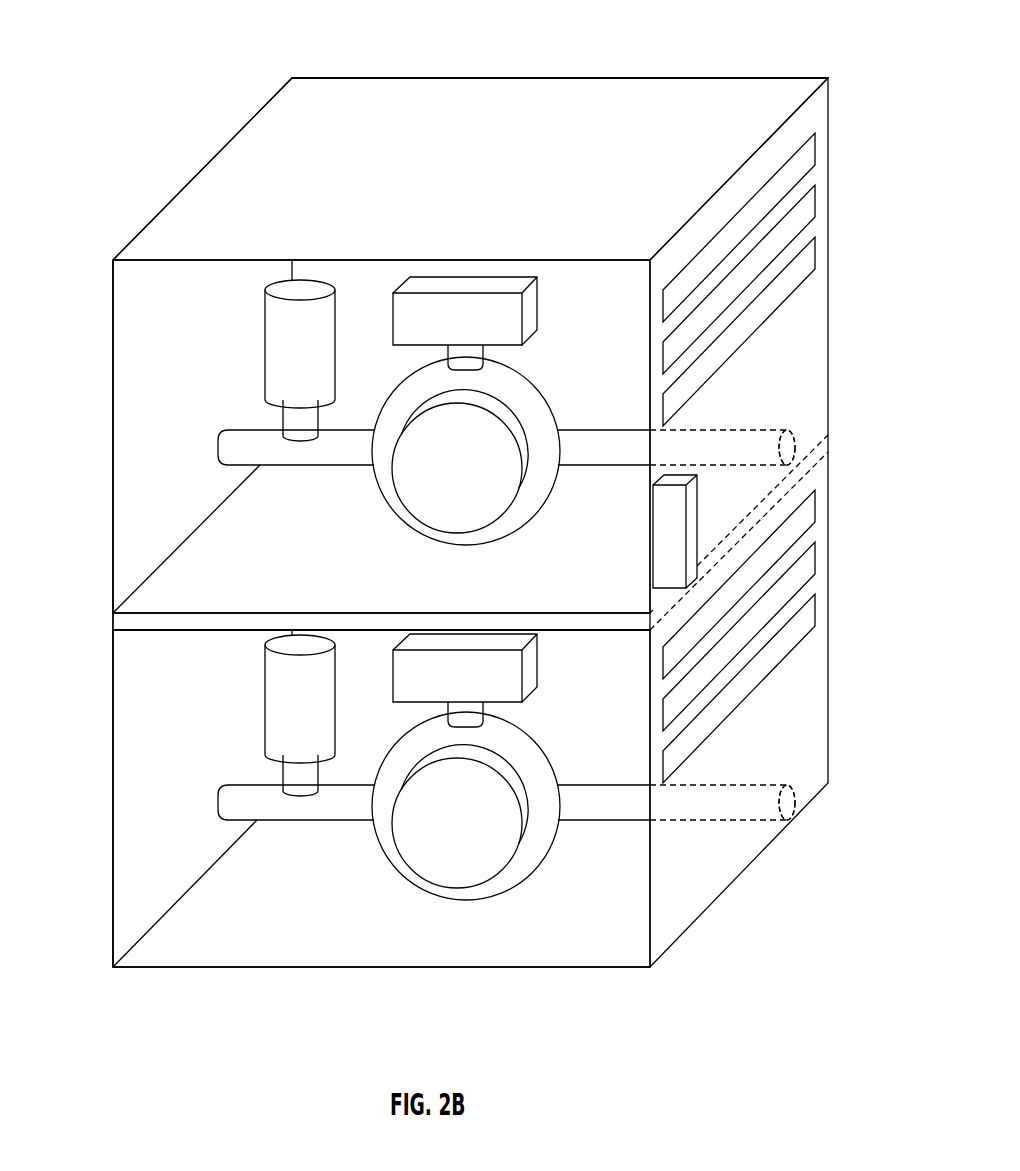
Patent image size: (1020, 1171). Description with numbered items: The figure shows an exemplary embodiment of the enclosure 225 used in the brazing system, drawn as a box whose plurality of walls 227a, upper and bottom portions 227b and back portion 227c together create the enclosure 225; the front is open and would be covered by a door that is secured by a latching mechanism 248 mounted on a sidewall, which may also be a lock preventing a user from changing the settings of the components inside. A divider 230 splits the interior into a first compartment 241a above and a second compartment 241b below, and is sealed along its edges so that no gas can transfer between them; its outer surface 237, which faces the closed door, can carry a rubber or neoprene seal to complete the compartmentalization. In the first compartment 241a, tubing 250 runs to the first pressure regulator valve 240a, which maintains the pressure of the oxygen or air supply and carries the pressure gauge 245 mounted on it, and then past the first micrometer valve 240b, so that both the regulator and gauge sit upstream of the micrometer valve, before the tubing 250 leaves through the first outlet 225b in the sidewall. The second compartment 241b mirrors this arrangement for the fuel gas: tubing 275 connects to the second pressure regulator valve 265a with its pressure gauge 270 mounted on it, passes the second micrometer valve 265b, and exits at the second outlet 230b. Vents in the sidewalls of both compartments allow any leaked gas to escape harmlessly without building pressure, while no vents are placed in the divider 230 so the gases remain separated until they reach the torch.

The enclosure 225 is at (710, 78).
The first outlet 225b is at (790, 430).
The walls 227a is at (166, 358).
The upper and bottom portions 227b is at (226, 192).
The back portion 227c is at (370, 288).
The divider 230 is at (148, 613).
The second outlet 230b is at (790, 803).
The outer surface of the divider 237 is at (168, 627).
The first pressure regulator valve 240a is at (382, 495).
The first micrometer valve 240b is at (305, 315).
The first compartment 241a is at (137, 300).
The second compartment 241b is at (613, 950).
The pressure gauge 245 is at (463, 292).
The latching mechanism 248 is at (693, 518).
The tubing 250 is at (228, 450).
The second pressure regulator valve 265a is at (387, 862).
The second micrometer valve 265b is at (272, 725).
The pressure gauge 270 is at (500, 678).
The tubing 275 is at (280, 820).